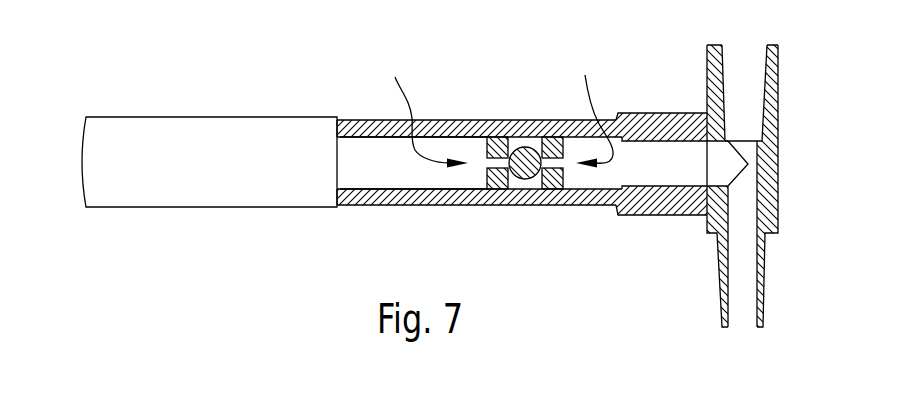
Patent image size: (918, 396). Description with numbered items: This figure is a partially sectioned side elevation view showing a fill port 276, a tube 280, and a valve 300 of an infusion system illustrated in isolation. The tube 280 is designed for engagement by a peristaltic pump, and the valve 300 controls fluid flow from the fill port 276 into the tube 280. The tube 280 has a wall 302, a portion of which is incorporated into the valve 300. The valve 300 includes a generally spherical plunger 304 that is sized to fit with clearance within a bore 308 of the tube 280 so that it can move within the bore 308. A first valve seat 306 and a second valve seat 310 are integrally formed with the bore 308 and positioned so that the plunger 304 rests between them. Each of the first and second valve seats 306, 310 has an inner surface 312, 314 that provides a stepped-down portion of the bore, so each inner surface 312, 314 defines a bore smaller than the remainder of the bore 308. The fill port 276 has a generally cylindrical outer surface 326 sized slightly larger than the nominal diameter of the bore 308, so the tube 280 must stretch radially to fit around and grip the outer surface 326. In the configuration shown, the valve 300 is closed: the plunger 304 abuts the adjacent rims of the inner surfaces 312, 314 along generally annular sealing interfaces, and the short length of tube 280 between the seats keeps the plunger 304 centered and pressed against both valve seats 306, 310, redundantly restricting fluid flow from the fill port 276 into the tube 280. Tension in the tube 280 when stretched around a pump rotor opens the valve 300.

The valve 300 is at (172, 44).
The tube 280 is at (209, 240).
The wall 302 is at (383, 120).
The bore 308 is at (423, 107).
The second valve seat 310 is at (373, 160).
The plunger 304 is at (521, 140).
The first valve seat 306 is at (590, 107).
The inner surface 314 is at (498, 177).
The inner surface 312 is at (580, 187).
The outer surface 326 is at (672, 200).
The fill port 276 is at (806, 261).